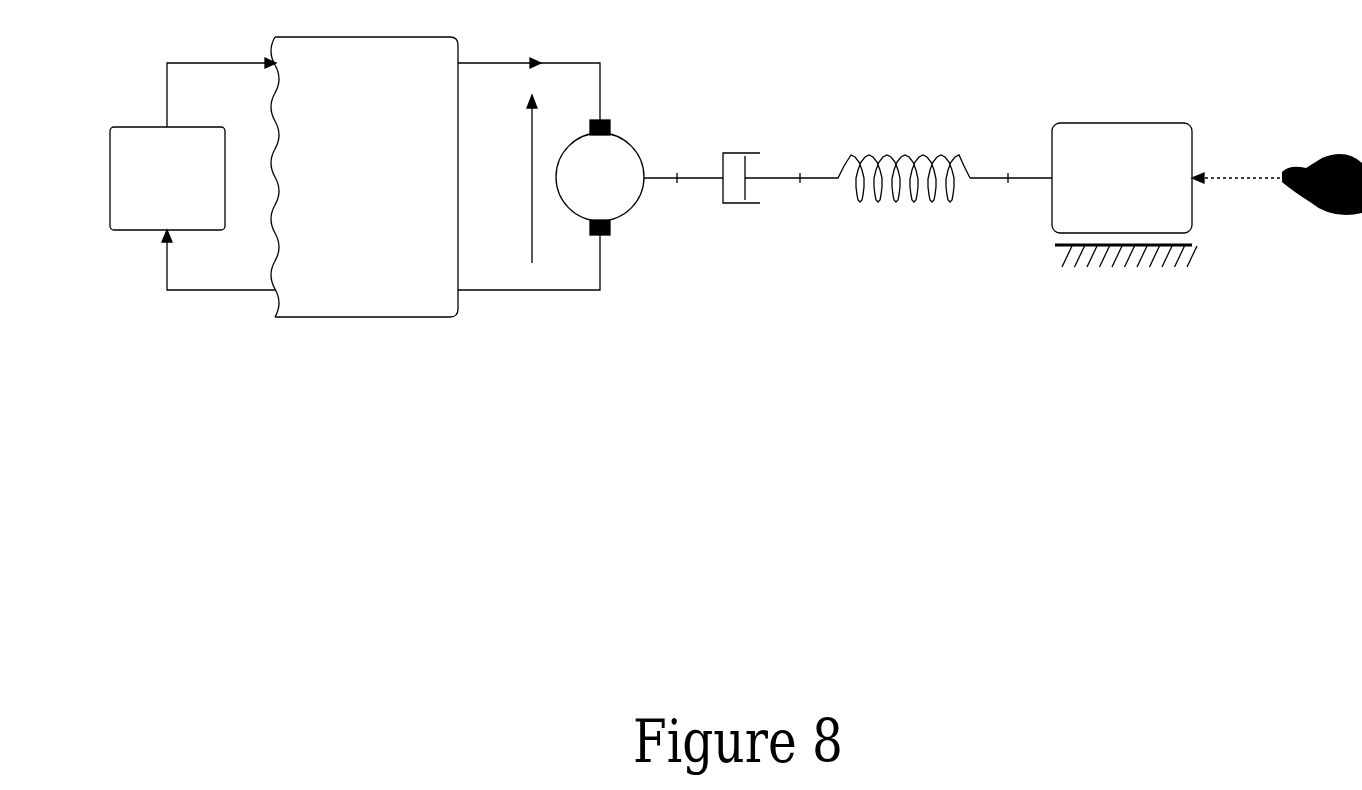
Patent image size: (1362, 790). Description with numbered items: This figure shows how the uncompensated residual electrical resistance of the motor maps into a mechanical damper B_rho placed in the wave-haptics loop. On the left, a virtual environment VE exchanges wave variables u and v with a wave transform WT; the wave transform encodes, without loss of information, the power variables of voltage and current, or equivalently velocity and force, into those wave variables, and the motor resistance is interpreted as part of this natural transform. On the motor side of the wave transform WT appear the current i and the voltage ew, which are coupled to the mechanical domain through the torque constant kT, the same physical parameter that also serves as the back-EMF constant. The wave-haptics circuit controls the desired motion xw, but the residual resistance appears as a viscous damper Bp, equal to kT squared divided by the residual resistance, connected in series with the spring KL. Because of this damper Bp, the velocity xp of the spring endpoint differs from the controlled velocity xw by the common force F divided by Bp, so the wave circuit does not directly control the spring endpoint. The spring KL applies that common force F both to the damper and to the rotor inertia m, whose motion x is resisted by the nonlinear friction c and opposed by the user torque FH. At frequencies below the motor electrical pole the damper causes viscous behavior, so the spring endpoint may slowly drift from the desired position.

The virtual environment VE is at (167, 178).
The wave variable u is at (221, 77).
The wave variable v is at (218, 283).
The wave transform WT is at (364, 177).
The motor current i is at (529, 75).
The wave voltage ew is at (503, 179).
The torque constant kT is at (600, 177).
The desired motion xw is at (683, 212).
The mechanical damper B_rho Bp is at (737, 156).
The spring endpoint velocity xp is at (787, 214).
The spring K_L KL is at (900, 154).
The common force F is at (1011, 161).
The rotor motion x is at (1008, 225).
The rotor inertia m is at (1122, 178).
The friction c is at (1135, 276).
The user torque FH is at (1277, 175).